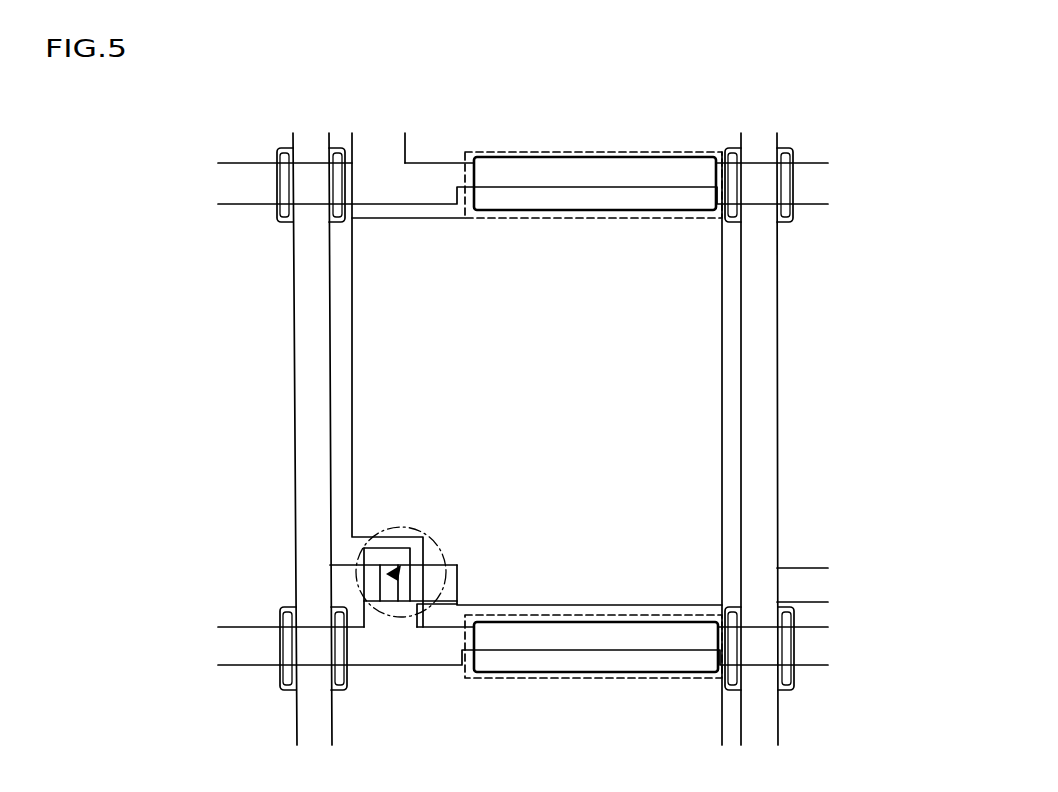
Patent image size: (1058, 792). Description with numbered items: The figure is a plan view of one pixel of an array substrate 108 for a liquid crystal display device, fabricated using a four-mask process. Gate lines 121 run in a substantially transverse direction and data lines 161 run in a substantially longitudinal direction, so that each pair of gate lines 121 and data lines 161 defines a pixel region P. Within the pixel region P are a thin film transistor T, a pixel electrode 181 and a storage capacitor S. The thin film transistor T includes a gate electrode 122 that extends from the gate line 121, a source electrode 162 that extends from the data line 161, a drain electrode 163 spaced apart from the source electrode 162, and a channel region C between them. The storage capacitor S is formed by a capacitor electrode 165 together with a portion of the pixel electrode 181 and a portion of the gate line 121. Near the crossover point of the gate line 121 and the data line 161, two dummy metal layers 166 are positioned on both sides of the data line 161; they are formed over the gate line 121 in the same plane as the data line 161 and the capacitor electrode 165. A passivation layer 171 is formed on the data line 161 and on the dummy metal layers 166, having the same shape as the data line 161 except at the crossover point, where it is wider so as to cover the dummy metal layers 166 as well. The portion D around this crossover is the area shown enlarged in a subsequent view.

The array substrate 108 is at (202, 428).
The gate line 121 is at (585, 212).
The gate electrode 122 is at (405, 532).
The data line 161 is at (293, 326).
The source electrode 162 is at (392, 603).
The drain electrode 163 is at (433, 605).
The capacitor electrode 165 is at (520, 212).
The dummy metal layer 166 is at (283, 653).
The passivation layer 171 is at (283, 147).
The pixel electrode 181 is at (346, 262).
The storage capacitor S is at (610, 150).
The portion D is at (278, 617).
The channel region C is at (419, 530).
The thin film transistor T is at (446, 548).
The pixel region P is at (680, 428).